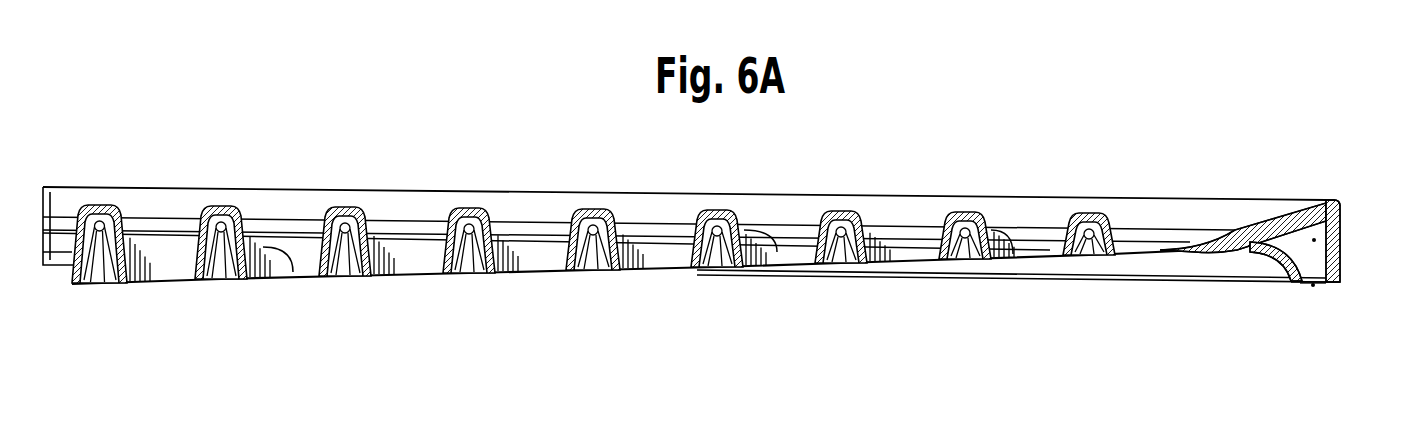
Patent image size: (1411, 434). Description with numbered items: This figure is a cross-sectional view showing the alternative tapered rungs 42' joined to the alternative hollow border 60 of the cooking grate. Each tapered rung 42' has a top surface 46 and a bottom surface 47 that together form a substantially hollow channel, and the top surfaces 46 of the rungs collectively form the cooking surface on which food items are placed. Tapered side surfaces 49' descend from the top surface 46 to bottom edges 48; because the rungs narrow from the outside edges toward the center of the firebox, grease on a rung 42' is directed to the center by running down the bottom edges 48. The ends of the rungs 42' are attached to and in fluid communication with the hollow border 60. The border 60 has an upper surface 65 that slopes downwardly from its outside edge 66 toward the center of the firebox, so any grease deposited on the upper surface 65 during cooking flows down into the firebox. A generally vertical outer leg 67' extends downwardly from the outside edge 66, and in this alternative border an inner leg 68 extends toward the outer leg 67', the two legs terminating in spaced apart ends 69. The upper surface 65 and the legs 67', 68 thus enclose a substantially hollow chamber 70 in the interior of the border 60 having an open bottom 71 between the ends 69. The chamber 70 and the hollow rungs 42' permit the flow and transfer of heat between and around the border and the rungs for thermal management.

The tapered rung 42' is at (736, 204).
The top surface 46 is at (848, 210).
The bottom surface 47 is at (237, 284).
The bottom edges 48 is at (127, 286).
The tapered side surfaces 49' is at (655, 286).
The border 60 is at (1196, 270).
The upper surface 65 is at (403, 210).
The outside edge 66 is at (1314, 240).
The outer leg 67' is at (1360, 241).
The inner leg 68 is at (1268, 252).
The spaced apart ends 69 is at (1334, 283).
The hollow chamber 70 is at (1341, 218).
The open bottom 71 is at (1313, 286).